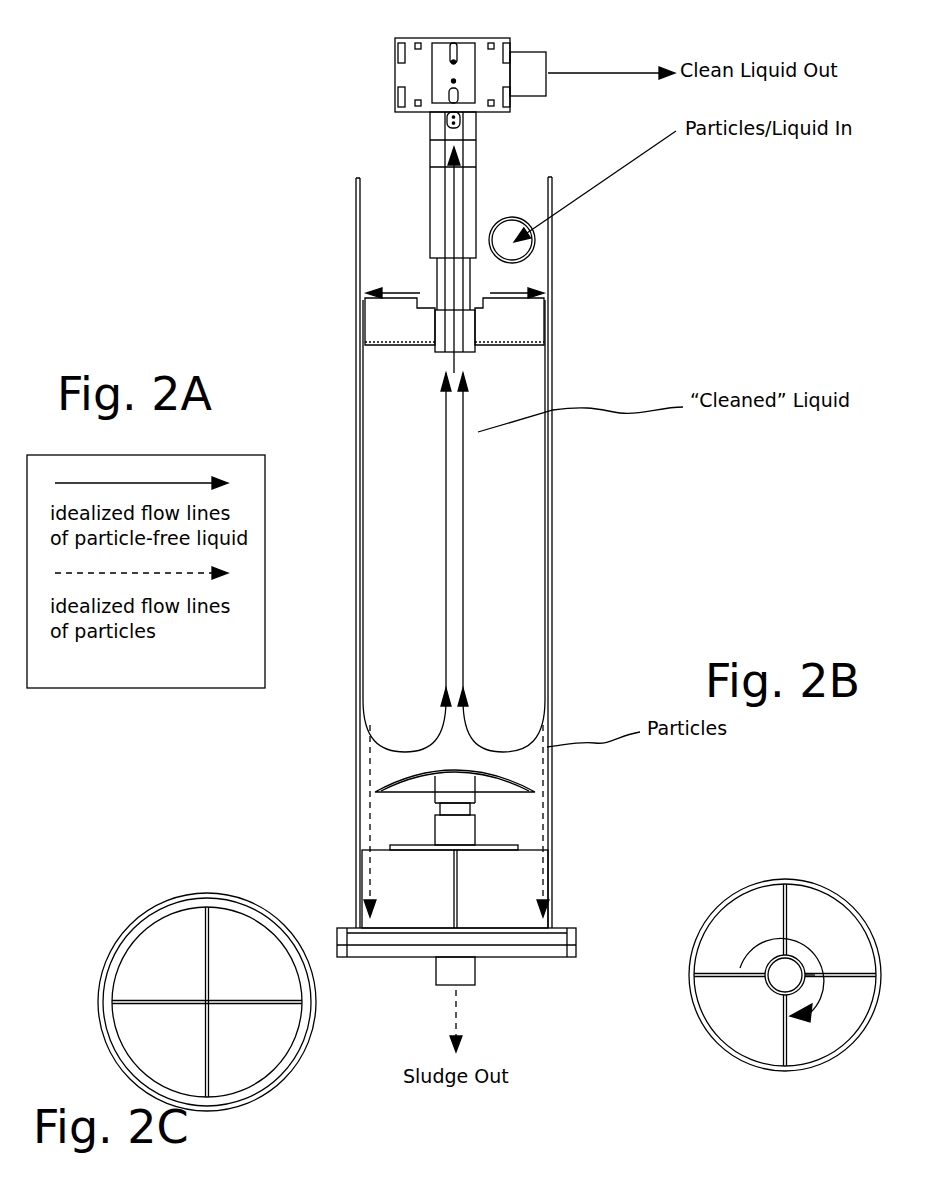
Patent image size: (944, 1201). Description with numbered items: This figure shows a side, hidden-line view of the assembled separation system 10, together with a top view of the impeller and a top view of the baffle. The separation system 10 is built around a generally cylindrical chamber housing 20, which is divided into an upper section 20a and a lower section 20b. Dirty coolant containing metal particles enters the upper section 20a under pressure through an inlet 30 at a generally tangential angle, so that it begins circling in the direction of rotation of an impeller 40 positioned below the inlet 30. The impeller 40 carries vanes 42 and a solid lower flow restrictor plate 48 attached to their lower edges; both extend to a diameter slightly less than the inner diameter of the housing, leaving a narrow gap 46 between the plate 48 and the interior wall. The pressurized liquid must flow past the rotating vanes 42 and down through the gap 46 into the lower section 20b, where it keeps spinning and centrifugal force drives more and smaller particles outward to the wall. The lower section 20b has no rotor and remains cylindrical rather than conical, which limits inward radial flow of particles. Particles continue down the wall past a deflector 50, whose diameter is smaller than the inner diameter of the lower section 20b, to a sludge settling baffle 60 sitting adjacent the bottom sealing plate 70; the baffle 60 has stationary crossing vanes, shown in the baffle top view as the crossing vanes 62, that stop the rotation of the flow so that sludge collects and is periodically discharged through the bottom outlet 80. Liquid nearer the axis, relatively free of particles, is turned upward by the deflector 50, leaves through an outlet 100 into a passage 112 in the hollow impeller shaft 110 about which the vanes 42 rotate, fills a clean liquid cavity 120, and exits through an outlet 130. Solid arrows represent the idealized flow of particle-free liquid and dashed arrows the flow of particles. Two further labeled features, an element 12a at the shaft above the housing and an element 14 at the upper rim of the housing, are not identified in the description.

In FIG. 2A, the separation system 10 is at (188, 170).
In FIG. 2A, the pump drive 12a is at (477, 190).
In FIG. 2A, the inlet conduit 14 is at (520, 210).
In FIG. 2A, the chamber housing 20 is at (548, 480).
In FIG. 2B, the chamber housing 20 is at (713, 1038).
In FIG. 2A, the upper section 20a is at (373, 218).
In FIG. 2A, the lower section 20b is at (513, 600).
In FIG. 2A, the inlet 30 is at (540, 245).
In FIG. 2A, the impeller 40 is at (449, 291).
In FIG. 2B, the impeller 40 is at (752, 909).
In FIG. 2A, the vanes 42 is at (442, 358).
In FIG. 2B, the vanes 42 is at (775, 910).
In FIG. 2A, the gap 46 is at (505, 330).
In FIG. 2B, the gap 46 is at (742, 883).
In FIG. 2A, the flow restrictor plate 48 is at (512, 352).
In FIG. 2B, the flow restrictor plate 48 is at (815, 910).
In FIG. 2A, the deflector 50 is at (535, 780).
In FIG. 2A, the baffle 60 is at (373, 840).
In FIG. 2C, the baffle 60 is at (177, 908).
In FIG. 2A, the divider 62 is at (457, 893).
In FIG. 2C, the divider 62 is at (260, 1003).
In FIG. 2A, the bottom sealing plate 70 is at (342, 930).
In FIG. 2C, the bottom sealing plate 70 is at (120, 940).
In FIG. 2A, the outlet 80 is at (480, 980).
In FIG. 2A, the outlet 100 is at (435, 353).
In FIG. 2A, the hollow impeller shaft 110 is at (433, 280).
In FIG. 2A, the passage 112 is at (455, 289).
In FIG. 2A, the clean liquid cavity 120 is at (393, 44).
In FIG. 2A, the outlet 130 is at (548, 48).